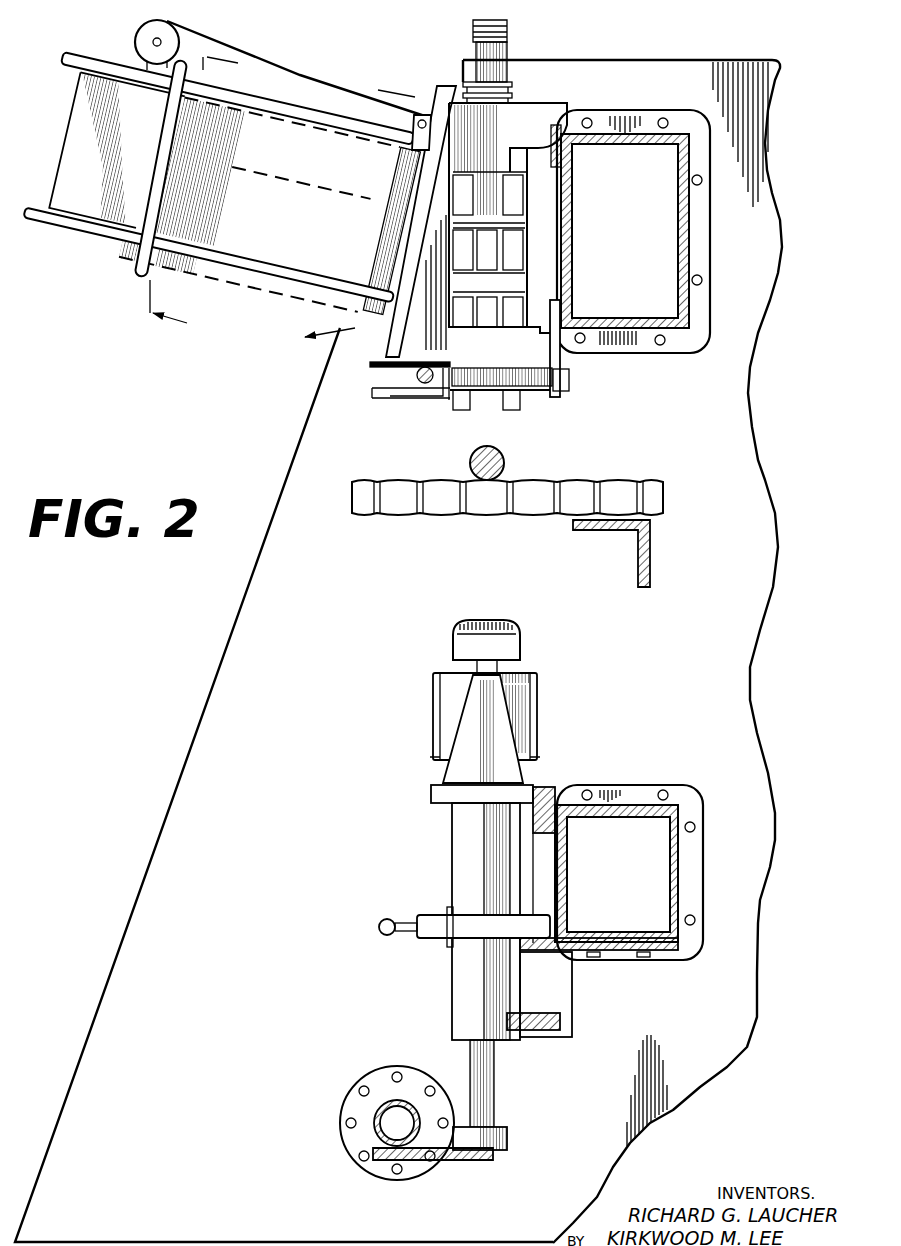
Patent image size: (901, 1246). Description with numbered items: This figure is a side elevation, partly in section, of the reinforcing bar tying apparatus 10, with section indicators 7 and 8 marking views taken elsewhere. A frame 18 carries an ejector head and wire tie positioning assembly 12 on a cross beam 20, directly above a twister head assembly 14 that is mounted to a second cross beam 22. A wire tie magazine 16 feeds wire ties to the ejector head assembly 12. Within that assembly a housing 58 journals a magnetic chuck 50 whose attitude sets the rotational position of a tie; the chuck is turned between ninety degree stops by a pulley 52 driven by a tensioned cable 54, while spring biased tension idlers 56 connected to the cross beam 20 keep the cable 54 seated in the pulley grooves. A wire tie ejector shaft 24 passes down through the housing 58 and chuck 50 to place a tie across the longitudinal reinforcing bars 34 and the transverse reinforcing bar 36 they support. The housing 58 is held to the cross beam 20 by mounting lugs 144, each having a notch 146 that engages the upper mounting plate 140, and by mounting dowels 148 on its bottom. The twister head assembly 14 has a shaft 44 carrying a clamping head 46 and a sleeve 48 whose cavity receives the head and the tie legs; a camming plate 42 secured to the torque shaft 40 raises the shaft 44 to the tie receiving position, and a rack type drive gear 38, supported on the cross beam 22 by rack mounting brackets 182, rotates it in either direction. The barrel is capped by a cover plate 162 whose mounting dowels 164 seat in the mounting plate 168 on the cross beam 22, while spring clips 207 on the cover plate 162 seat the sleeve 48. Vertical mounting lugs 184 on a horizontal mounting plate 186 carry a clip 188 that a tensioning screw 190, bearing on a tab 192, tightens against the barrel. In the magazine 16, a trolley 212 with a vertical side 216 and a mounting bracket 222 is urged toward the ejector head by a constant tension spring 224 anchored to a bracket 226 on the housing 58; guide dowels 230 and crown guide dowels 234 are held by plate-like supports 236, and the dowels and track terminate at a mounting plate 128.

The section line 7- 7 is at (349, 212).
The section line 8- 8 is at (201, 200).
The apparatus 10 is at (701, 60).
The ejector head and wire tie positioning assembly 12 is at (522, 97).
The twister head assembly 14 is at (545, 721).
The wire tie magazine 16 is at (291, 279).
The frame 18 is at (738, 520).
The cross beam 20 is at (687, 275).
The second cross beam 22 is at (680, 848).
The wire tie ejector shaft 24 is at (511, 32).
The longitudinal reinforcing bars 34 is at (577, 480).
The transverse reinforcing bar 36 is at (505, 458).
The rack type drive gear 38 is at (550, 1030).
The torque shaft 40 is at (403, 1100).
The camming plate 42 is at (463, 1160).
The shaft 44 is at (486, 1100).
The clamping head 46 is at (452, 637).
The sleeve 48 is at (512, 700).
The magnetic chuck 50 is at (512, 257).
The pulley 52 is at (652, 565).
The tensioned cable 54 is at (421, 382).
The spring biased tension idlers 56 is at (377, 372).
The housing 58 is at (506, 135).
The mounting plate 128 is at (380, 323).
The upper mounting plate 140 is at (575, 168).
The mounting lugs 144 is at (583, 112).
The notch 146 is at (562, 364).
The mounting dowels 148 is at (571, 325).
The cover plate 162 is at (440, 790).
The mounting dowels 164 is at (545, 790).
The mounting plate 168 is at (560, 797).
The rack mounting brackets 182 is at (542, 1000).
The mounting lugs 184 is at (556, 920).
The horizontal mounting plate 186 is at (662, 957).
The clip 188 is at (440, 918).
The tensioning screw 190 is at (389, 917).
The tab 192 is at (447, 940).
The spring clips 207 is at (472, 715).
The trolley 212 is at (85, 144).
The vertical side 216 is at (60, 150).
The mounting bracket 222 is at (114, 60).
The constant tension spring 224 is at (165, 33).
The bracket 226 is at (437, 104).
The left guide dowels 230 is at (85, 224).
The crown guide dowels 234 is at (72, 58).
The plate-like supports 236 is at (133, 265).